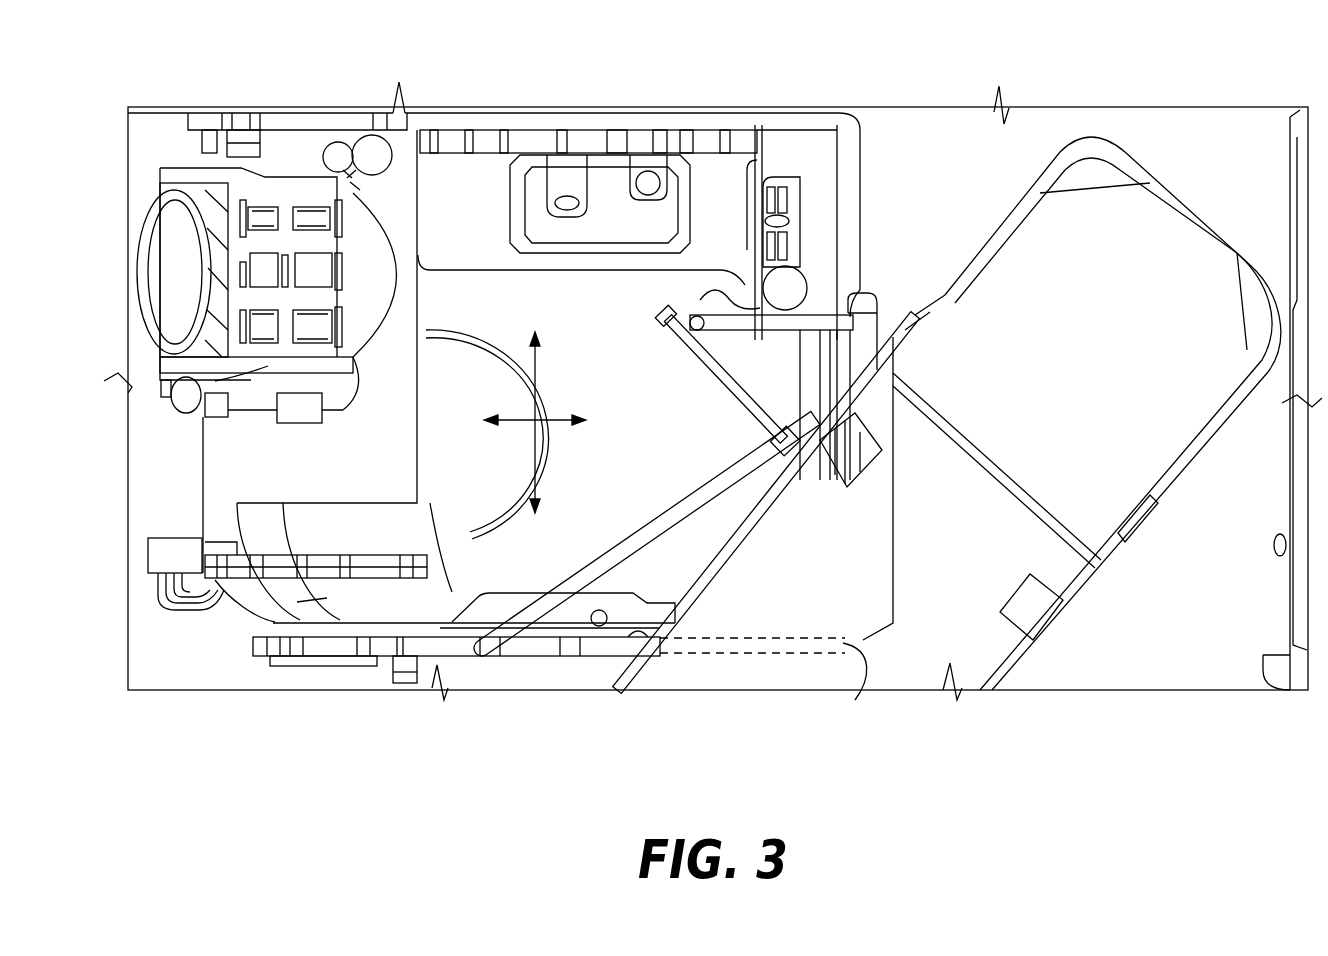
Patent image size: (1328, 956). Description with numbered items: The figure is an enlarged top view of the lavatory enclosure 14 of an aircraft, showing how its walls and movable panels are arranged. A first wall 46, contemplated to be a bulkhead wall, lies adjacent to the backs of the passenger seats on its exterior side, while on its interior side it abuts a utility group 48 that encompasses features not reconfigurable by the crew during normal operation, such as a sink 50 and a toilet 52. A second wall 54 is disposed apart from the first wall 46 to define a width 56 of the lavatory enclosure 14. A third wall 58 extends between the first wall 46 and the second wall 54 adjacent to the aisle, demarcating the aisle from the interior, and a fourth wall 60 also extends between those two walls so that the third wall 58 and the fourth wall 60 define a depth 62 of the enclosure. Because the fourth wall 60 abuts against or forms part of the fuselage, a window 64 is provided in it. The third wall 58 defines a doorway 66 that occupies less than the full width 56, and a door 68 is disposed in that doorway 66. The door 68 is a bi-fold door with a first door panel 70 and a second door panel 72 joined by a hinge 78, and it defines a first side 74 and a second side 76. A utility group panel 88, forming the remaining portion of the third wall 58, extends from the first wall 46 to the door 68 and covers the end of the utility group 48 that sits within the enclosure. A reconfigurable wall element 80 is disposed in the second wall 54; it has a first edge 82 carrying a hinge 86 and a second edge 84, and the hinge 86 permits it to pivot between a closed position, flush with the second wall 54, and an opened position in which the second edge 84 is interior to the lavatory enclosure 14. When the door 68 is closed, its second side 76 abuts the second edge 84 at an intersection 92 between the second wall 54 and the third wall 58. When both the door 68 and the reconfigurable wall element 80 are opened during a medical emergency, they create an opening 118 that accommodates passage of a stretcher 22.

The lavatory enclosure 14 is at (280, 78).
The stretcher 22 is at (1150, 222).
The first wall 46 is at (793, 107).
The utility group 48 is at (813, 190).
The sink 50 is at (616, 187).
The toilet 52 is at (450, 503).
The second wall 54 is at (357, 680).
The width 56 is at (532, 410).
The third wall 58 is at (850, 233).
The fourth wall 60 is at (237, 463).
The depth 62 is at (518, 422).
The window 64 is at (178, 263).
The doorway 66 is at (897, 478).
The door 68 is at (698, 290).
The first door panel 70 is at (745, 310).
The second door panel 72 is at (700, 385).
The first side 74 is at (870, 293).
The second side 76 is at (786, 401).
The hinge 78 is at (665, 318).
The reconfigurable wall element 80 is at (645, 527).
The first edge 82 is at (648, 689).
The second edge 84 is at (780, 428).
The hinge 86 is at (480, 680).
The utility group panel 88 is at (867, 228).
The intersection 92 is at (855, 700).
The opening 118 is at (665, 573).